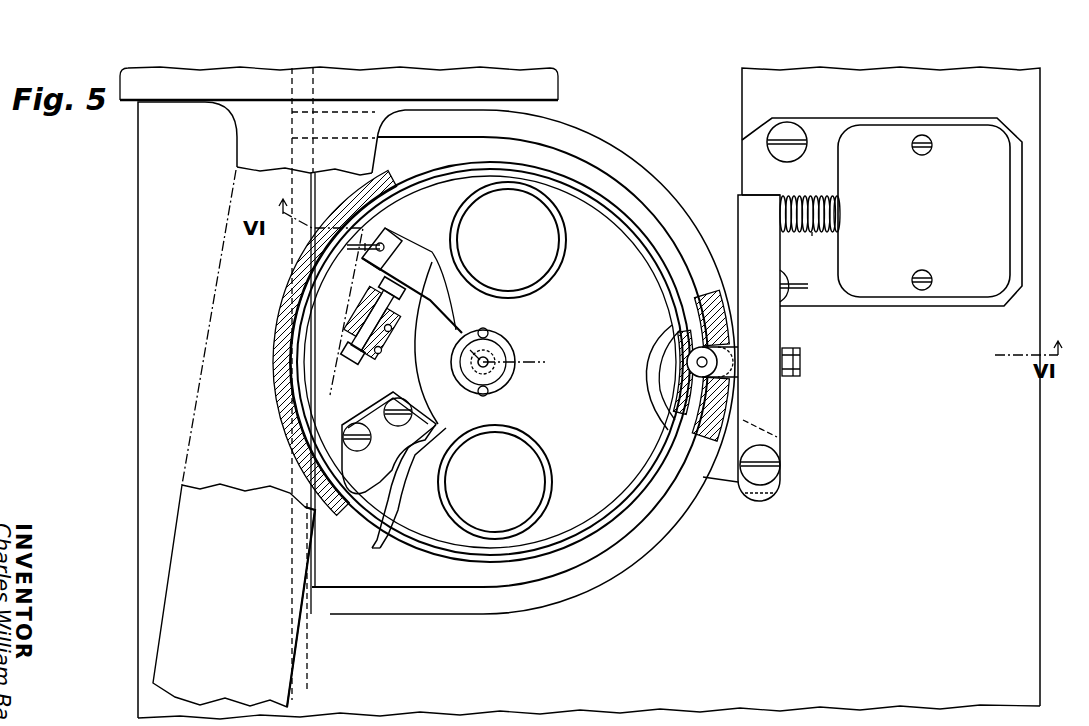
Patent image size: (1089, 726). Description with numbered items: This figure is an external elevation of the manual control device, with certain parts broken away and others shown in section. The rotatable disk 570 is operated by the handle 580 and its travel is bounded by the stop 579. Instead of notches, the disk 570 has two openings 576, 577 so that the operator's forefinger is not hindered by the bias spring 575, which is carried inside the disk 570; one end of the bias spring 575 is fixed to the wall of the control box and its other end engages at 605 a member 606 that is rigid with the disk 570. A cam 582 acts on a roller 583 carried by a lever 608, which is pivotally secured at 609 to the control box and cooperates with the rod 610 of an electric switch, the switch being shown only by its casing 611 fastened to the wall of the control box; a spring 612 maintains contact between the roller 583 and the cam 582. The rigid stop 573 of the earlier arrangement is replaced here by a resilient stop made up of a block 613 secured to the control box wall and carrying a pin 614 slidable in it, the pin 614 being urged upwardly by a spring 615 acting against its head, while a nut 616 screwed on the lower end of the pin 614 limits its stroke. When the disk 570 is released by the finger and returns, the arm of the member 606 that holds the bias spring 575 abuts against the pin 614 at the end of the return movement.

The disk 570 is at (514, 568).
The rigid stop 573 is at (442, 408).
The bias spring 575 is at (300, 336).
The opening 576 is at (533, 478).
The opening 577 is at (527, 208).
The stop 579 is at (392, 523).
The handle 580 is at (187, 567).
The cam 582 is at (677, 400).
The roller 583 is at (705, 345).
The engagement point of spring 605 is at (379, 239).
The member 606 is at (418, 267).
The lever 608 is at (764, 416).
The pivot 609 is at (770, 470).
The rod 610 is at (808, 196).
The casing 611 is at (997, 232).
The spring 612 is at (816, 244).
The block 613 is at (385, 350).
The pin 614 is at (378, 297).
The spring 615 is at (362, 328).
The nut 616 is at (350, 366).